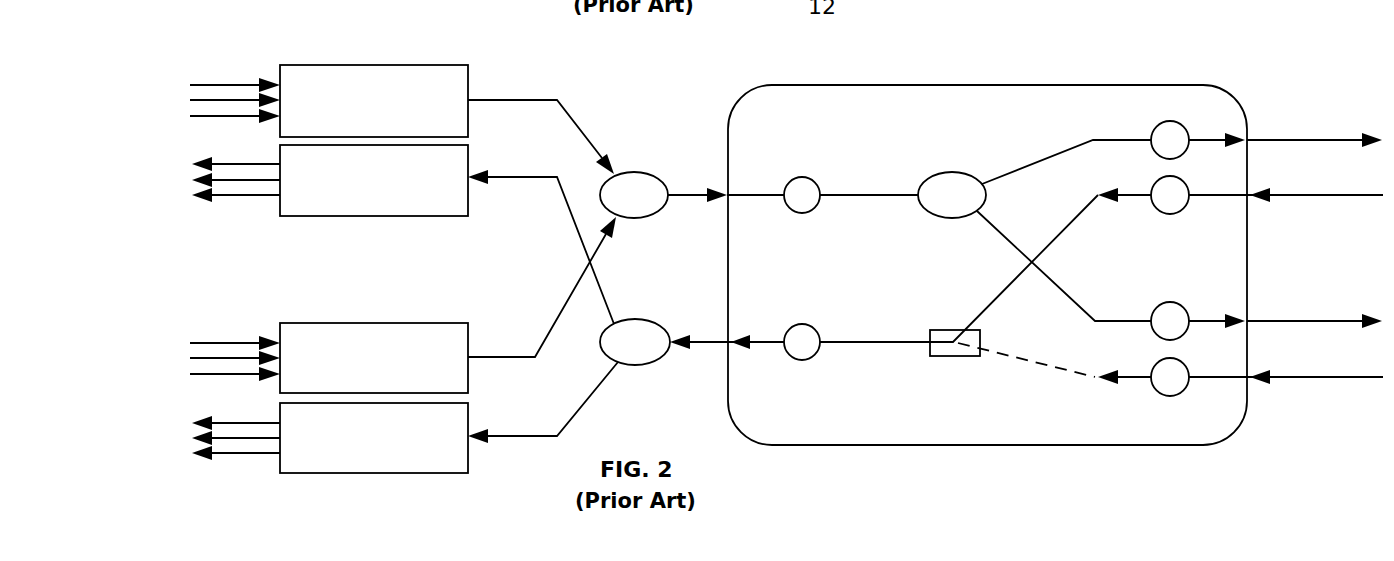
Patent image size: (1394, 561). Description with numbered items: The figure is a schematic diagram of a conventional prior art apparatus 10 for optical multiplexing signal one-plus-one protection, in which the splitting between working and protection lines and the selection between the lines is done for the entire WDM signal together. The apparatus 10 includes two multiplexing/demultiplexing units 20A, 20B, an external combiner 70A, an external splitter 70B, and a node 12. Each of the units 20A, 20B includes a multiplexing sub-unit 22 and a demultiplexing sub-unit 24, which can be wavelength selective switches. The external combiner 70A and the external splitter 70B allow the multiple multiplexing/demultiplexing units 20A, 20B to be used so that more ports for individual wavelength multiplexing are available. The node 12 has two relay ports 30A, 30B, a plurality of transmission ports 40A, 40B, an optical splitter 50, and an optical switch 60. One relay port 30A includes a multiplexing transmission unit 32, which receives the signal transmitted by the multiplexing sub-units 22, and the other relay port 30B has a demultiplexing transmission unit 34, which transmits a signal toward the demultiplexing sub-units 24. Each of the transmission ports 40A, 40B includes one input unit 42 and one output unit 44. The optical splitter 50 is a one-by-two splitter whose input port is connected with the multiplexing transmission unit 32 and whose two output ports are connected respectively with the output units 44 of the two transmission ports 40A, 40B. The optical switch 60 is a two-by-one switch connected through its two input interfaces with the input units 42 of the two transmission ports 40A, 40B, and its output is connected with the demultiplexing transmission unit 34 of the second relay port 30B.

The apparatus 10 is at (708, 97).
The node 12 is at (822, 446).
The multiplexing/demultiplexing unit 20A is at (245, 38).
The multiplexing/demultiplexing unit 20B is at (245, 298).
The multiplexing sub-unit 22 is at (425, 65).
The demultiplexing sub-unit 24 is at (425, 216).
The relay port 30A is at (727, 192).
The relay port 30B is at (727, 338).
The multiplexing transmission unit 32 is at (802, 213).
The demultiplexing transmission unit 34 is at (802, 360).
The transmission port 40A is at (1247, 128).
The transmission port 40B is at (1247, 384).
The input unit 42 is at (1157, 208).
The output unit 44 is at (1157, 127).
The optical splitter 50 is at (955, 218).
The optical switch 60 is at (950, 357).
The external combiner 70A is at (632, 219).
The external splitter 70B is at (637, 365).